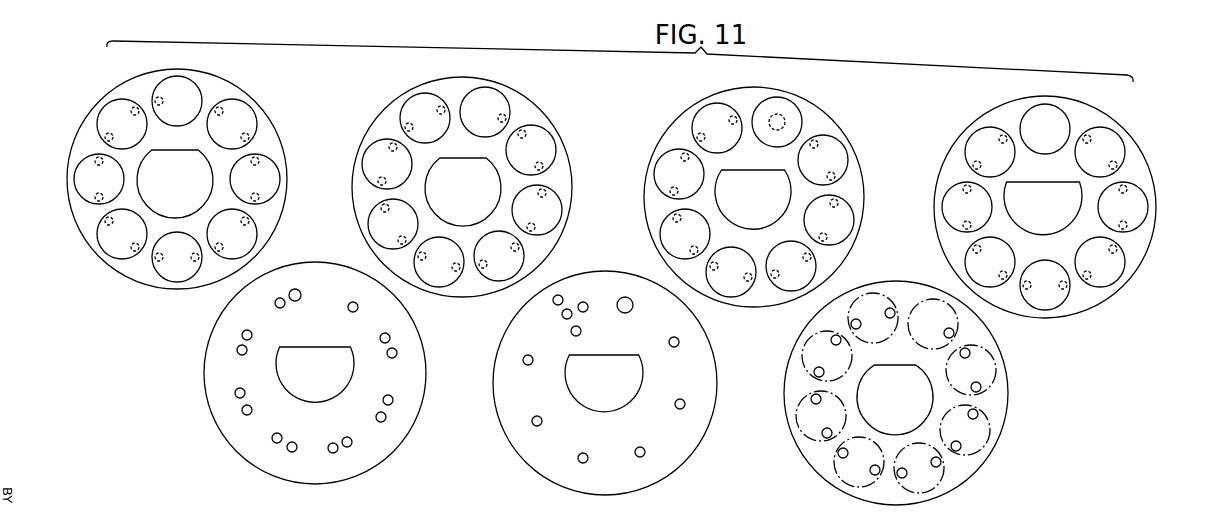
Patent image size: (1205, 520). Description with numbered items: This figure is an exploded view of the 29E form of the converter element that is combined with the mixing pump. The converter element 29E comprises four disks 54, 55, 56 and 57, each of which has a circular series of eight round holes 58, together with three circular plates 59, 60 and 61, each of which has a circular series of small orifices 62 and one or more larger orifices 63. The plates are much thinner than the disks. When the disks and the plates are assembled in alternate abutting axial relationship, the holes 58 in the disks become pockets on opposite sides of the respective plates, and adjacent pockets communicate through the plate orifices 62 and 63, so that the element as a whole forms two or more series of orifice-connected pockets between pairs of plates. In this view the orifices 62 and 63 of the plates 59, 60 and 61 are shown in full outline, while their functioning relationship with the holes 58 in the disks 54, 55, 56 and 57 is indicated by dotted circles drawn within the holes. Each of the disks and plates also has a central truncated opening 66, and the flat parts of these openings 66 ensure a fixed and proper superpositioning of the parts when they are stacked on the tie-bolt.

The disk 54 is at (279, 210).
The disk 55 is at (572, 217).
The disk 56 is at (858, 226).
The disk 57 is at (1150, 243).
The round holes 58 is at (248, 123).
The circular plate 59 is at (417, 392).
The circular plate 60 is at (693, 435).
The circular plate 61 is at (977, 460).
The small orifices 62 is at (380, 422).
The larger orifices 63 is at (298, 289).
The central truncated openings 66 is at (679, 296).
The converter element 29E is at (626, 256).